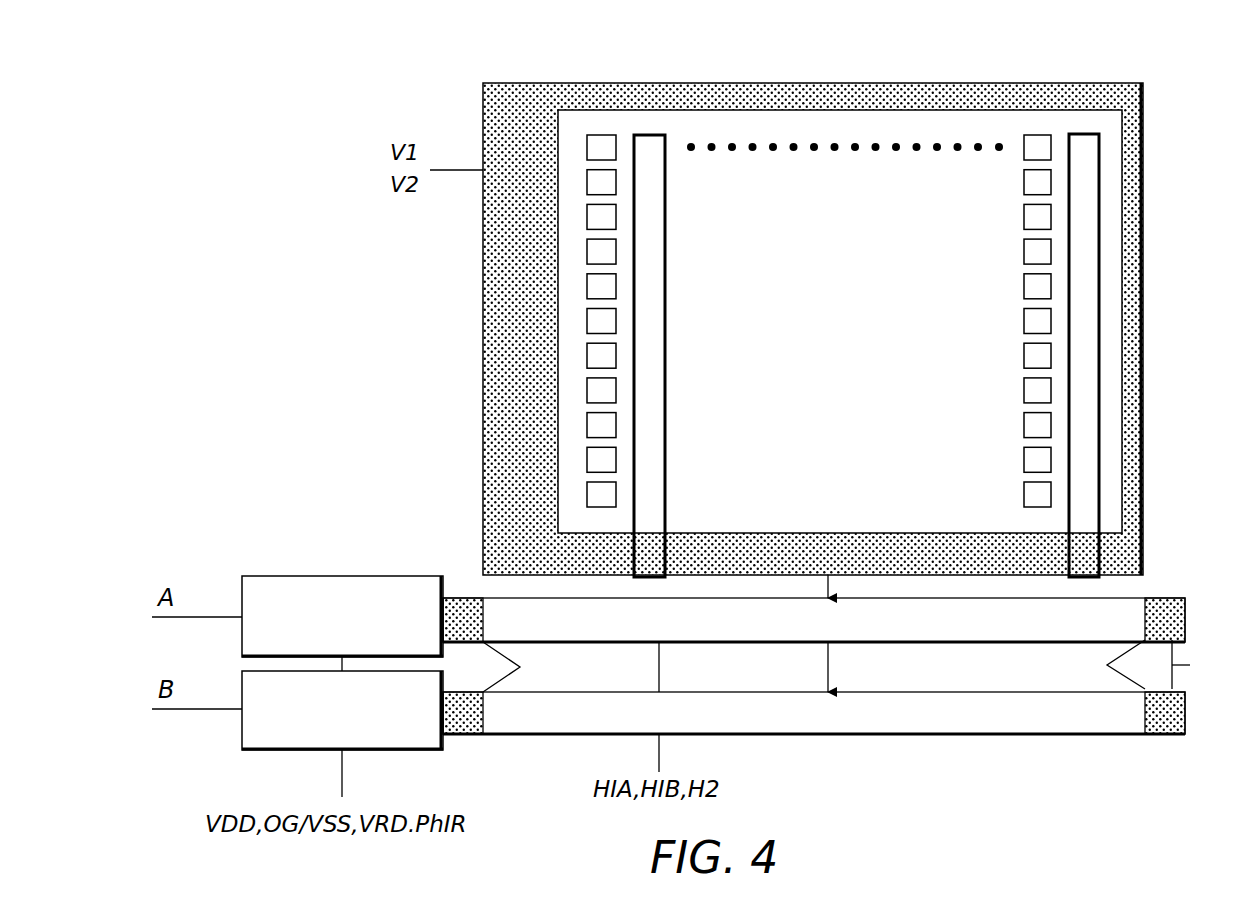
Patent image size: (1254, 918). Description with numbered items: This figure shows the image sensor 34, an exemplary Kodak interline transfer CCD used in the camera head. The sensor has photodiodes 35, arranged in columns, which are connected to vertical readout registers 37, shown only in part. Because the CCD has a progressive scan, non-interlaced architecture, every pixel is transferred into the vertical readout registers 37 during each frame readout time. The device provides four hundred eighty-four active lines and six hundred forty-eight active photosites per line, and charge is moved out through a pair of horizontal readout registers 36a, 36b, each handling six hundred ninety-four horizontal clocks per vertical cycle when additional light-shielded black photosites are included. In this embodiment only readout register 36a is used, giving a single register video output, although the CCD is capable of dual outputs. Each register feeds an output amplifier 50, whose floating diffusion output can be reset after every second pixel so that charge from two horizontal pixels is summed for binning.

The image sensor 34 is at (1144, 182).
The photodiodes 35 is at (600, 183).
The vertical readout registers 37 is at (1085, 224).
The readout register 36a is at (1138, 590).
The readout register 36b is at (1093, 736).
The output amplifier 50 is at (322, 576).